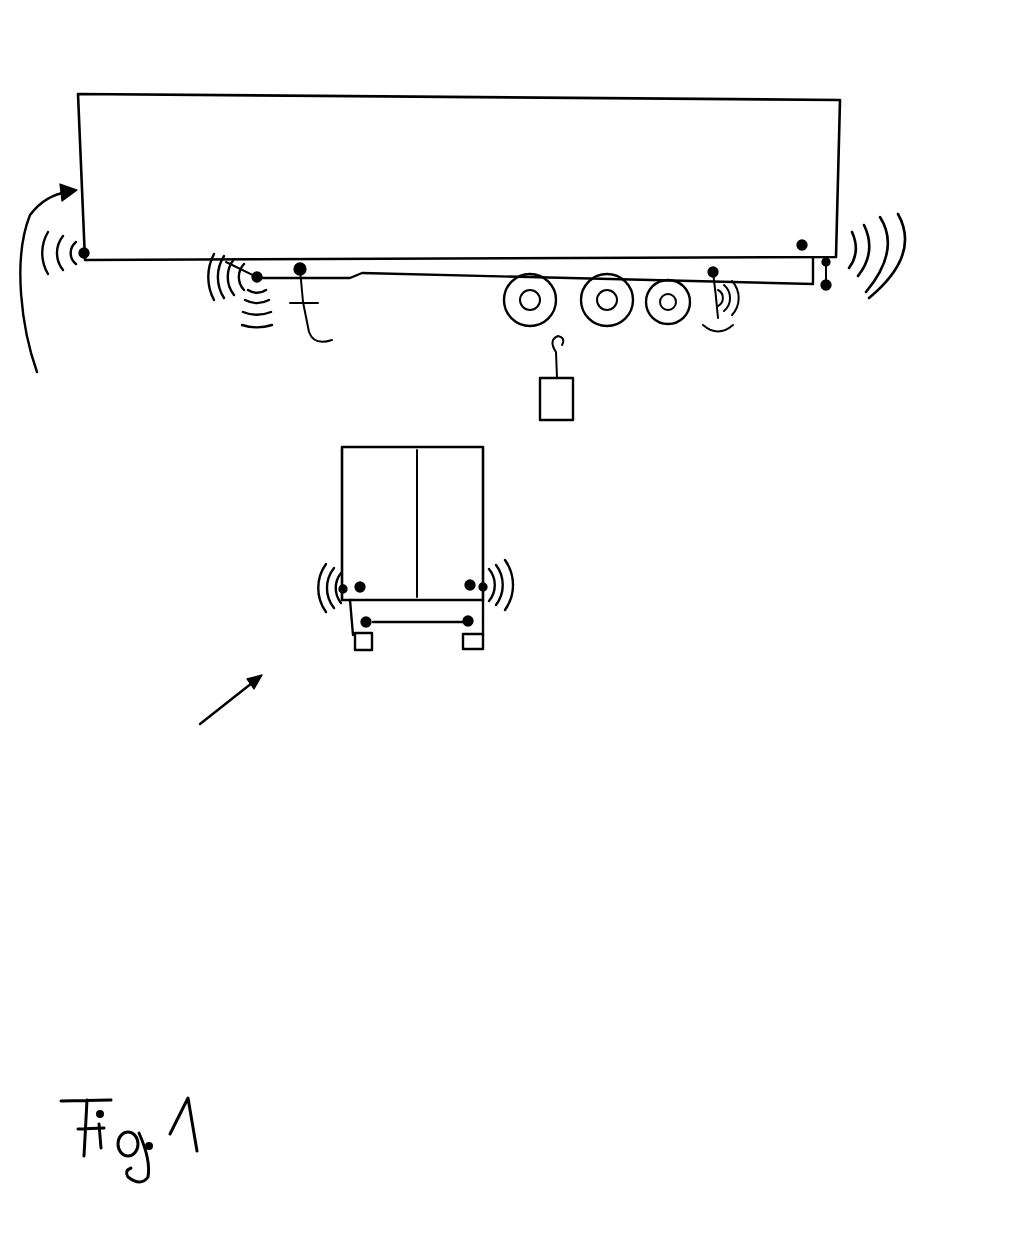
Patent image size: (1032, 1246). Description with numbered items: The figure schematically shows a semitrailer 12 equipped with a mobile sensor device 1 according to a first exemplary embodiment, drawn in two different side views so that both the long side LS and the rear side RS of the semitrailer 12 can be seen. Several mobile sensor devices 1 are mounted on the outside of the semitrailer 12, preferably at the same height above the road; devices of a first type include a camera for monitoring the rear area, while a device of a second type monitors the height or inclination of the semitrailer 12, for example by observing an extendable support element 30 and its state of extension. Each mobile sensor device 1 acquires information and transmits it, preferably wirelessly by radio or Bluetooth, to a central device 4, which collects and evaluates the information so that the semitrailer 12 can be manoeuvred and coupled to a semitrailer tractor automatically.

The semitrailer 12 is at (610, 133).
The mobile sensor device 1 is at (257, 277).
The extendable support element 30 is at (333, 314).
The central device 4 is at (565, 400).
The long side LS is at (48, 300).
The rear side RS is at (201, 726).